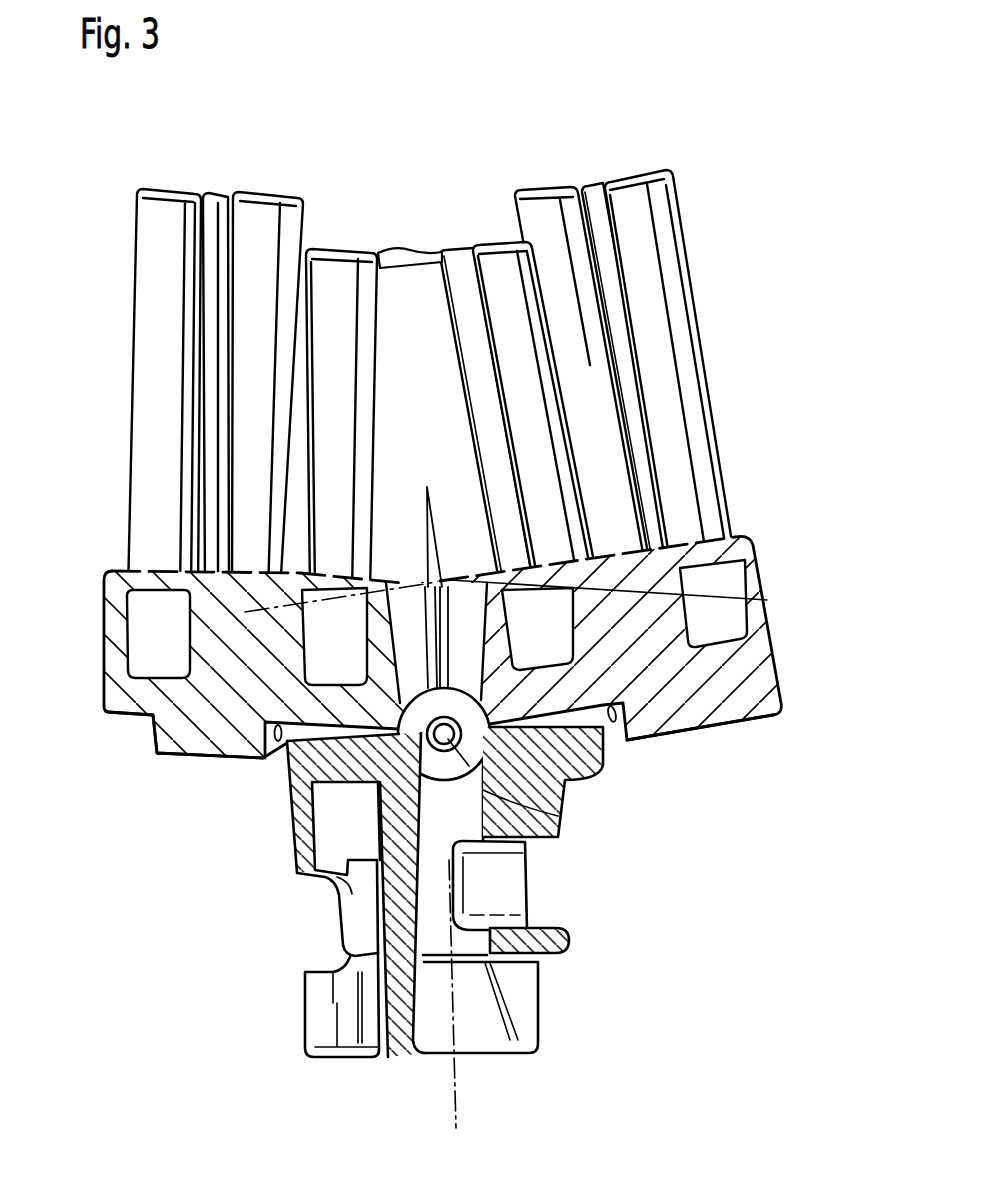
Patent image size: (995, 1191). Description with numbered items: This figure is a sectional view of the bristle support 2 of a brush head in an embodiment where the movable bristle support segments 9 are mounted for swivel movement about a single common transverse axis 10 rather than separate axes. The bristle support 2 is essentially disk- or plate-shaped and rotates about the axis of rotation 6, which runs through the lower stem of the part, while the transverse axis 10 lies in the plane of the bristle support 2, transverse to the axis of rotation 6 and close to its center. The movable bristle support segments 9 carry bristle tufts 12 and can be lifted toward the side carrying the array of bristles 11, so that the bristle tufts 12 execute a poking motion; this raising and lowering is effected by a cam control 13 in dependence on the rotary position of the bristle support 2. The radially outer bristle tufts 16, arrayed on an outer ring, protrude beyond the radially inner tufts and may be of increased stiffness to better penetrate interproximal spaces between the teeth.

The bristle support 2 is at (778, 604).
The axis of rotation 6 is at (458, 1133).
The movable bristle support segments 9 is at (120, 704).
The transverse axis 10 is at (558, 818).
The array of bristles 11 is at (350, 222).
The bristle tufts 12 is at (430, 249).
The cam control 13 is at (437, 580).
The radially outer bristle tufts 16 is at (158, 421).